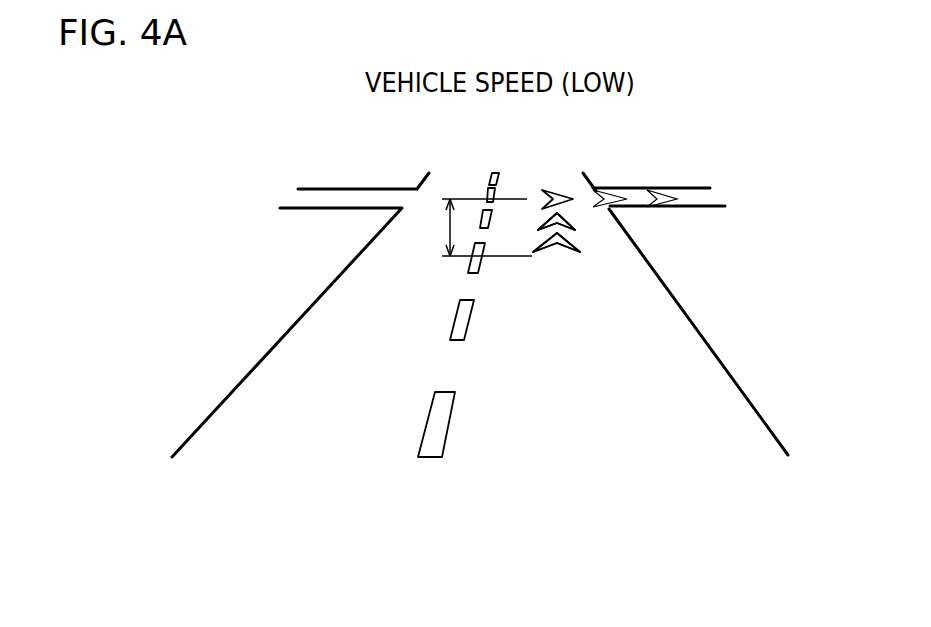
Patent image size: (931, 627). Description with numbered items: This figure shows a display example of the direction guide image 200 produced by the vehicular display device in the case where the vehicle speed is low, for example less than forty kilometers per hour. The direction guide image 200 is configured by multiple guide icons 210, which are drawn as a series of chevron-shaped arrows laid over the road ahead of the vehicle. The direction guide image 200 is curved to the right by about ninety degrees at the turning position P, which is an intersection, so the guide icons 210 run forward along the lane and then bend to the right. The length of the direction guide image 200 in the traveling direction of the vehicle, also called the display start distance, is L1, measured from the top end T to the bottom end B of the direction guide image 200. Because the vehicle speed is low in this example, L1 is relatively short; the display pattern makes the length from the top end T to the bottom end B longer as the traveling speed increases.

The turning position P is at (530, 193).
The top end T is at (455, 199).
The bottom end B is at (453, 258).
The length of the direction guide image L1 is at (434, 227).
The direction guide image 200 is at (555, 265).
The guide icon 210 is at (575, 246).